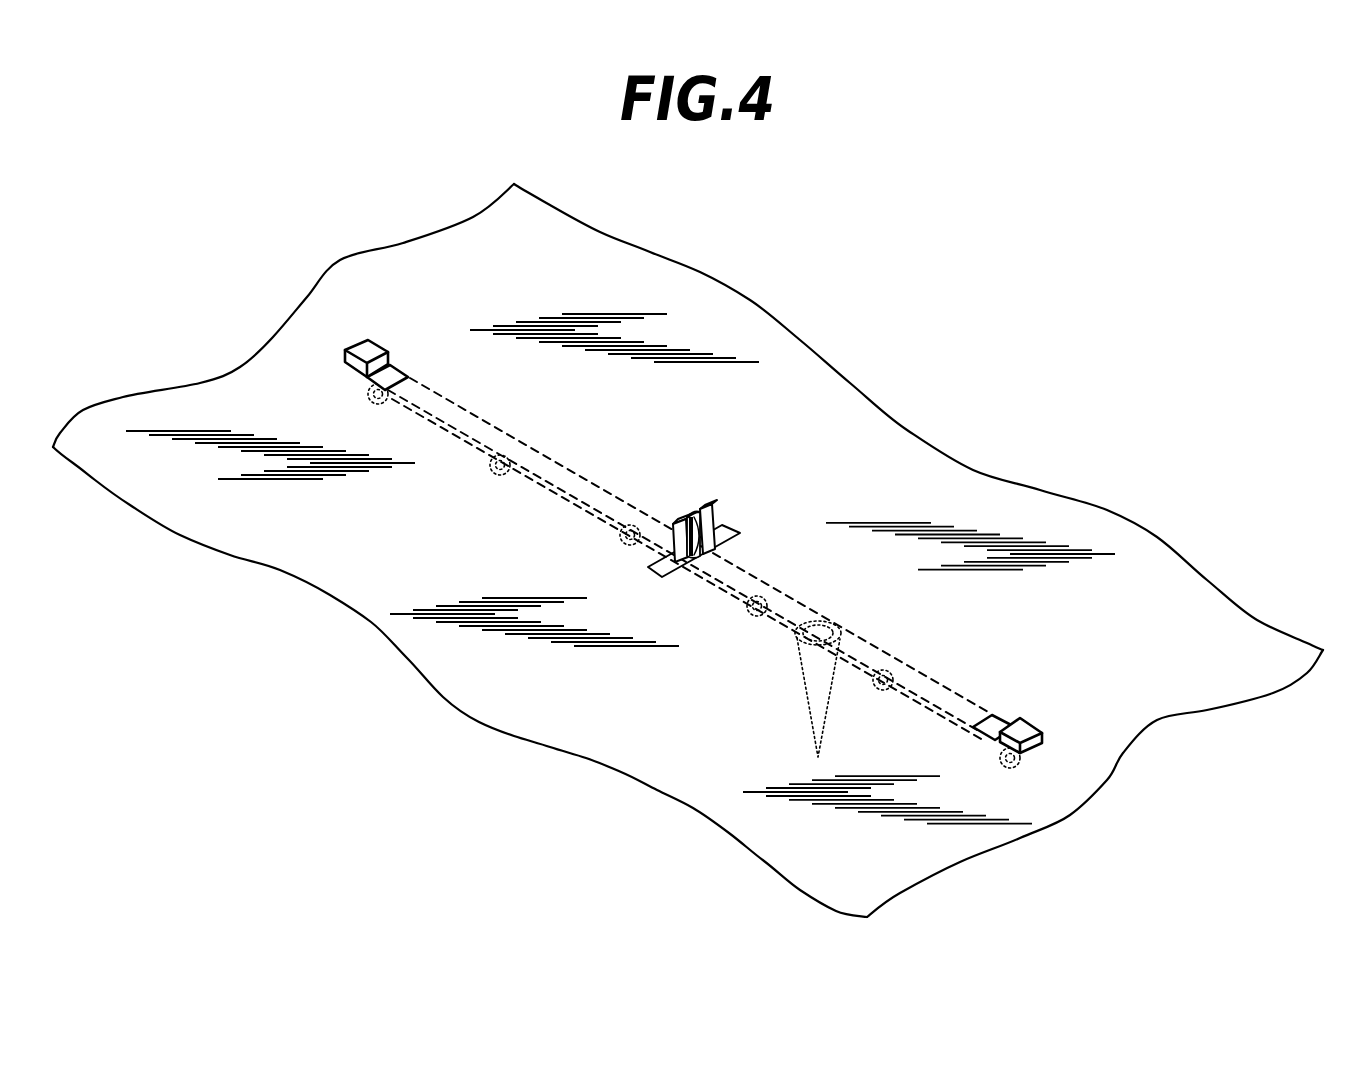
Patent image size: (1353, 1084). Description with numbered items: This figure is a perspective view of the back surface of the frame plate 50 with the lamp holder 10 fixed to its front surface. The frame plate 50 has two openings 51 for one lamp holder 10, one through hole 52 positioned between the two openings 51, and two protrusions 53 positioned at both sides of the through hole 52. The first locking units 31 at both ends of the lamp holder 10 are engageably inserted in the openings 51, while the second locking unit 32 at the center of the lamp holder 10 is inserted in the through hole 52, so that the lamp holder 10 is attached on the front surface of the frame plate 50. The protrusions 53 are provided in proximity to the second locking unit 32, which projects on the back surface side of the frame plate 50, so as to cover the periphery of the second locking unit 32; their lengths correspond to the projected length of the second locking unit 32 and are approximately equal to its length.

The lamp holder 10 is at (744, 688).
The first locking unit 31 is at (367, 355).
The second locking unit 32 is at (692, 512).
The frame plate 50 is at (1032, 510).
The opening 51 is at (395, 372).
The through hole 52 is at (700, 558).
The protrusion 53 is at (708, 508).